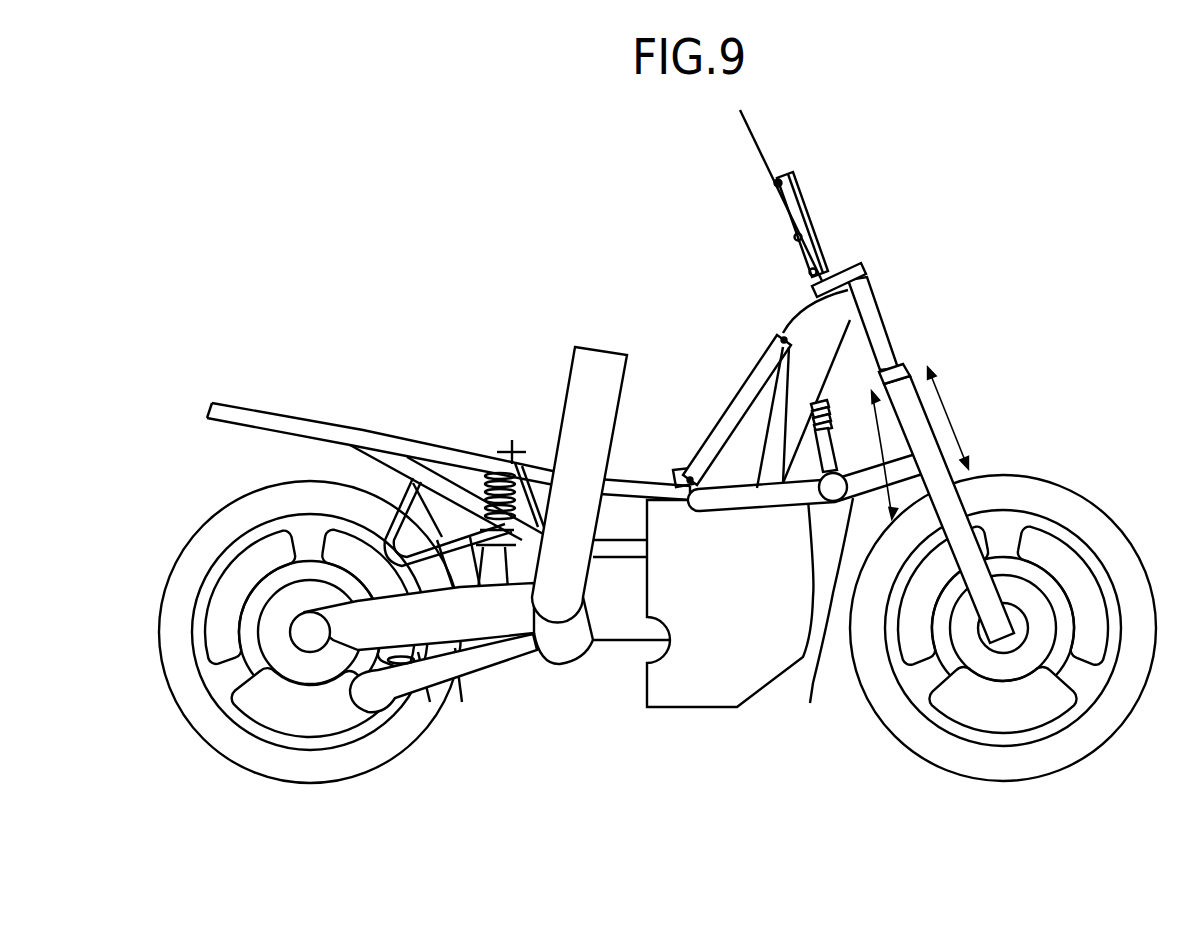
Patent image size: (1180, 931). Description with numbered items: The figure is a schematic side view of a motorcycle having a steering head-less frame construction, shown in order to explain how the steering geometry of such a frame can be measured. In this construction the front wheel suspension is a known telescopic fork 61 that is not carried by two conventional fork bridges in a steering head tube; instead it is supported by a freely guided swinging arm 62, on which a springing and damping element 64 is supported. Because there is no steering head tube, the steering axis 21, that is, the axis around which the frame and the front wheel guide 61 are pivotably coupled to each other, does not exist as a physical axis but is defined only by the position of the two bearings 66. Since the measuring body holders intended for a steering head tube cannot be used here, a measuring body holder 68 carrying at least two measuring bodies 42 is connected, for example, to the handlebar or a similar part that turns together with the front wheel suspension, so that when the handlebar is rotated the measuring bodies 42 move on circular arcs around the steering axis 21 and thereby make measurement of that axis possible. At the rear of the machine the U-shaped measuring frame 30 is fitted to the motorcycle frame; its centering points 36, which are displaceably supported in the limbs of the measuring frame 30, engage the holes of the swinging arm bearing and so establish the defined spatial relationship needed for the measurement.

The steering axis 21 is at (748, 124).
The measuring body holder 68 is at (793, 173).
The measuring bodies 42 is at (810, 270).
The bearings 66 is at (848, 292).
The telescopic fork 61 is at (905, 378).
The springing and damping element 64 is at (808, 416).
The swinging arm 62 is at (811, 696).
The measuring frame 30 is at (577, 405).
The centering points 36 is at (538, 665).